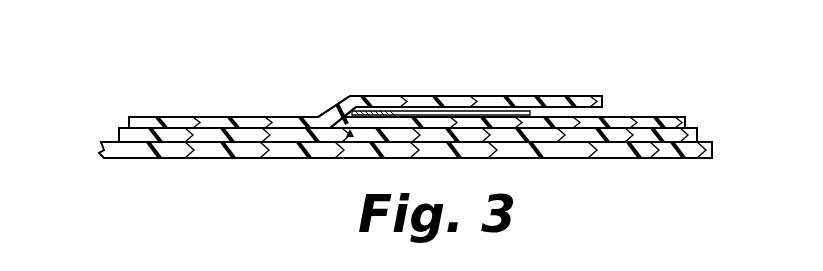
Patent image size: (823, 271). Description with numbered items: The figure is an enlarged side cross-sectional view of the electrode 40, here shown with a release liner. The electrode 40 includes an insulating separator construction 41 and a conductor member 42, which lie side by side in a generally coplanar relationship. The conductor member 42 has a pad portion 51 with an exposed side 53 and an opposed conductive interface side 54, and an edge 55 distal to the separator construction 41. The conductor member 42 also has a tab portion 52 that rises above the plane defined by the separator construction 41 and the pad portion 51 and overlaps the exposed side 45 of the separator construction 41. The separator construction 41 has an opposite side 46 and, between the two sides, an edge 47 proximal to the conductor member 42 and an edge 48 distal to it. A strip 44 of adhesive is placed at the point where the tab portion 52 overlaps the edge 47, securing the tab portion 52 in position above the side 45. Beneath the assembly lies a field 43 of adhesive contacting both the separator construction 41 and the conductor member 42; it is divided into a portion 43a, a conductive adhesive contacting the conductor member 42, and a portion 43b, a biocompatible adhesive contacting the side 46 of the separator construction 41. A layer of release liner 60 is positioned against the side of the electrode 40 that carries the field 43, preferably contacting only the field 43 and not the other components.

The electrode 40 is at (668, 72).
The insulating separator construction 41 is at (630, 117).
The conductor member 42 is at (167, 117).
The field of adhesive 43 is at (132, 133).
The field portion 43a is at (163, 135).
The field portion 43b is at (575, 137).
The strip of adhesive 44 is at (385, 112).
The side 45 is at (660, 117).
The side 46 is at (673, 147).
The edge 47 is at (344, 110).
The edge 48 is at (683, 118).
The pad portion 51 is at (147, 117).
The tab portion 52 is at (523, 97).
The exposed side 53 is at (213, 118).
The conductive interface side 54 is at (283, 118).
The edge 55 is at (128, 120).
The release liner 60 is at (235, 145).